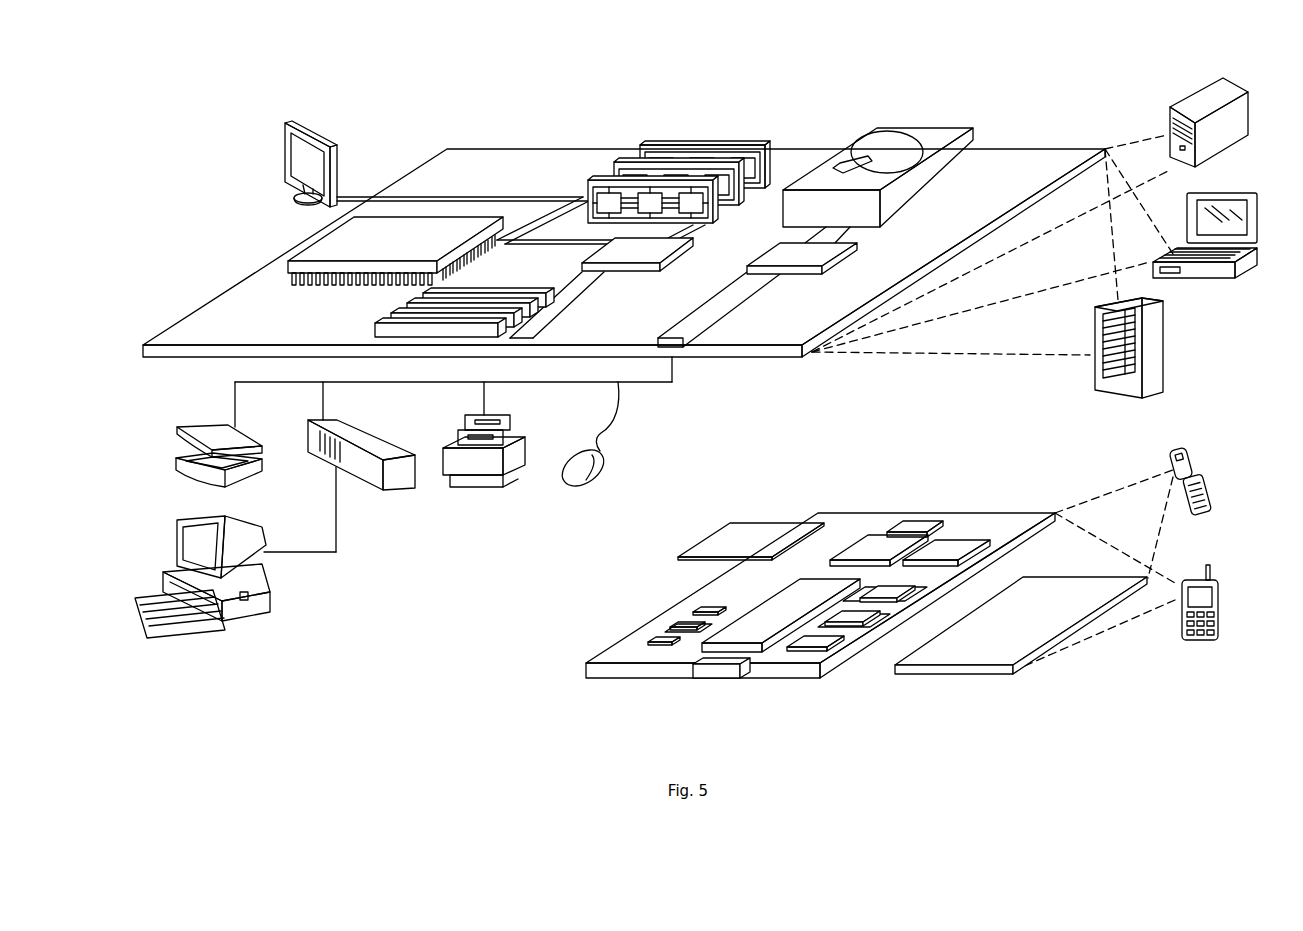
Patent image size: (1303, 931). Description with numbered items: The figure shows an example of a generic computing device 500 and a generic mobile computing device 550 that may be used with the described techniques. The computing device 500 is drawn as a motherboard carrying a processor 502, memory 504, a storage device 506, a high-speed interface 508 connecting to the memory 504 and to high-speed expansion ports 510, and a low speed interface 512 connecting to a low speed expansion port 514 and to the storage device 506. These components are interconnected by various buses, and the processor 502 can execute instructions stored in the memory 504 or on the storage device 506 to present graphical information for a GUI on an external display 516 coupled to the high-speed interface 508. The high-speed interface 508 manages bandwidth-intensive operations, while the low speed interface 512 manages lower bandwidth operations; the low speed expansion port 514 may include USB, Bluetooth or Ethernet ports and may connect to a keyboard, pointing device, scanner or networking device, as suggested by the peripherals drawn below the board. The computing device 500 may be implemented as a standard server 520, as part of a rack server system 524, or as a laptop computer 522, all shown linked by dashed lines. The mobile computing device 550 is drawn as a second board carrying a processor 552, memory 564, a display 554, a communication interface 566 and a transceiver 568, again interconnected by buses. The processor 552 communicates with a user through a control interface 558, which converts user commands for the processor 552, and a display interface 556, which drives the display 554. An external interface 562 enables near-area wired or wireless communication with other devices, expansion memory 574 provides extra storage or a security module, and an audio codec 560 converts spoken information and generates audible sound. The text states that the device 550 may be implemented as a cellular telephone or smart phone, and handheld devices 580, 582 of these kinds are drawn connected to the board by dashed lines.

The computing device 500 is at (403, 100).
The processor 502 is at (311, 246).
The memory 504 is at (709, 146).
The storage device 506 is at (918, 131).
The high-speed interface 508 is at (651, 248).
The high-speed expansion ports 510 is at (398, 313).
The low speed interface 512 is at (777, 252).
The low speed expansion port 514 is at (677, 335).
The display 516 is at (289, 123).
The standard server 520 is at (1190, 104).
The laptop computer 522 is at (1235, 192).
The rack server system 524 is at (1165, 346).
The mobile computing device 550 is at (914, 521).
The processor 552 is at (803, 522).
The display 554 is at (1052, 586).
The display interface 556 is at (825, 645).
The control interface 558 is at (856, 620).
The audio codec 560 is at (890, 598).
The external interface 562 is at (718, 660).
The memory 564 is at (676, 625).
The communication interface 566 is at (871, 537).
The transceiver 568 is at (952, 540).
The expansion memory 574 is at (731, 521).
The cellular telephone 580 is at (1185, 448).
The smartphone 582 is at (1195, 576).